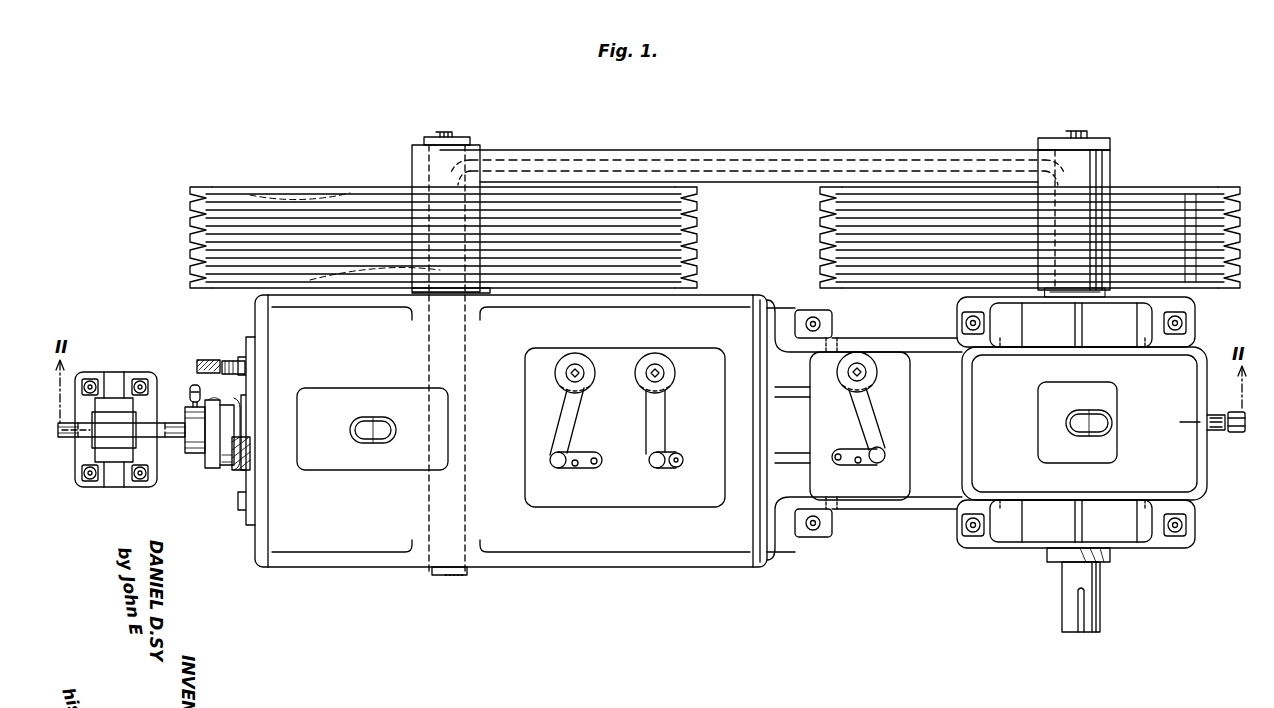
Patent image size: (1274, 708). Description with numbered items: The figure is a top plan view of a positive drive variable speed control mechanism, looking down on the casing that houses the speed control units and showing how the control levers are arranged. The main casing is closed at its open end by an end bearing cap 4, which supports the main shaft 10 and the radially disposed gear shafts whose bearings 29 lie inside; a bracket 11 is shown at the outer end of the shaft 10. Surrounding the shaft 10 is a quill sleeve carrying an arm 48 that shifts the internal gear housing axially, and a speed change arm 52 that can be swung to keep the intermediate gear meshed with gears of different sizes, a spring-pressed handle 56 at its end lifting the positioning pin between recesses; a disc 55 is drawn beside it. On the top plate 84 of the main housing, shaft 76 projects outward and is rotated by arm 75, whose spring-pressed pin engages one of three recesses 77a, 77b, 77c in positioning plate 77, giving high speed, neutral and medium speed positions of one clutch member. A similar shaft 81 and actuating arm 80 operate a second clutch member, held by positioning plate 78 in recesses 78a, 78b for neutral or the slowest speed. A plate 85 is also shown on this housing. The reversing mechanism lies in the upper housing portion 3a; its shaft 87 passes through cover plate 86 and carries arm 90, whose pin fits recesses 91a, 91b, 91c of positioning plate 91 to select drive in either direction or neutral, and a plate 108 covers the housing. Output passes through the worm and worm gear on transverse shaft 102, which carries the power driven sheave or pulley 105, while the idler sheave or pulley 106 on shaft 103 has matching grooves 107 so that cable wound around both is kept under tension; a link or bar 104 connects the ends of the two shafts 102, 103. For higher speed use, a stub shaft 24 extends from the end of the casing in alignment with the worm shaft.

The upper housing portion 3a is at (783, 500).
The end bearing cap 4 is at (255, 548).
The main shaft 10 is at (175, 440).
The bearing bracket 11 is at (113, 455).
The stub shaft 24 is at (1216, 430).
The bearings 29 is at (238, 472).
The arm 48 is at (190, 390).
The speed change arm 52 is at (205, 395).
The disc 55 is at (216, 466).
The spring-pressed handle 56 is at (211, 360).
The arm 75 is at (556, 420).
The shaft 76 is at (573, 368).
The positioning plate 77 is at (590, 453).
The recess 77a is at (552, 462).
The recess 77b is at (572, 468).
The recess 77c is at (594, 466).
The positioning plate 78 is at (679, 466).
The recess 78a is at (656, 468).
The recess 78b is at (679, 453).
The actuating arm 80 is at (662, 408).
The shaft 81 is at (658, 368).
The top plate 84 is at (532, 374).
The plate 85 is at (347, 395).
The cover plate 86 is at (895, 397).
The shaft 87 is at (857, 366).
The arm 90 is at (862, 408).
The positioning plate 91 is at (852, 452).
The recess 91a is at (885, 455).
The recess 91b is at (859, 466).
The recess 91c is at (837, 466).
The shaft 102 is at (1058, 142).
The shaft 103 is at (422, 167).
The link or bar 104 is at (753, 150).
The sheave or pulley 105 is at (1140, 186).
The idler sheave or pulley 106 is at (252, 192).
The grooves 107 is at (820, 215).
The plate 108 is at (1040, 420).